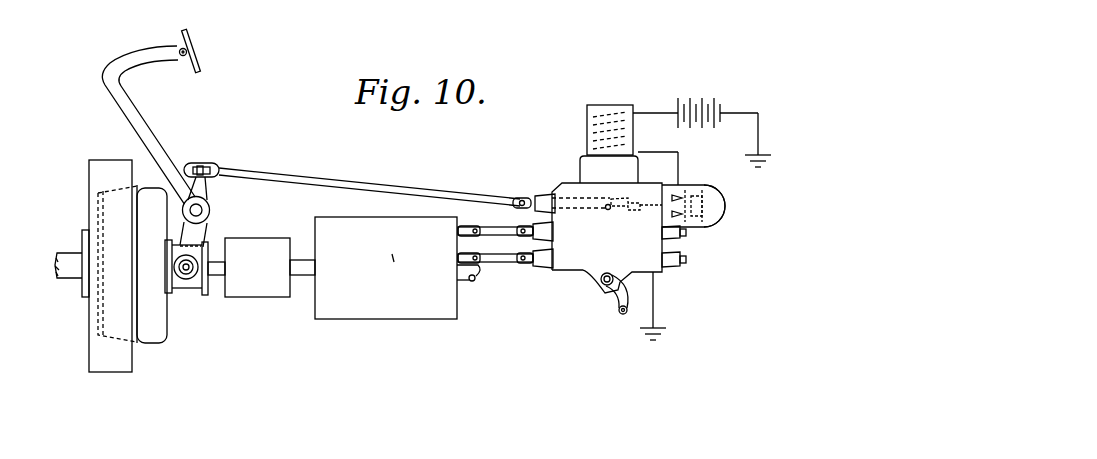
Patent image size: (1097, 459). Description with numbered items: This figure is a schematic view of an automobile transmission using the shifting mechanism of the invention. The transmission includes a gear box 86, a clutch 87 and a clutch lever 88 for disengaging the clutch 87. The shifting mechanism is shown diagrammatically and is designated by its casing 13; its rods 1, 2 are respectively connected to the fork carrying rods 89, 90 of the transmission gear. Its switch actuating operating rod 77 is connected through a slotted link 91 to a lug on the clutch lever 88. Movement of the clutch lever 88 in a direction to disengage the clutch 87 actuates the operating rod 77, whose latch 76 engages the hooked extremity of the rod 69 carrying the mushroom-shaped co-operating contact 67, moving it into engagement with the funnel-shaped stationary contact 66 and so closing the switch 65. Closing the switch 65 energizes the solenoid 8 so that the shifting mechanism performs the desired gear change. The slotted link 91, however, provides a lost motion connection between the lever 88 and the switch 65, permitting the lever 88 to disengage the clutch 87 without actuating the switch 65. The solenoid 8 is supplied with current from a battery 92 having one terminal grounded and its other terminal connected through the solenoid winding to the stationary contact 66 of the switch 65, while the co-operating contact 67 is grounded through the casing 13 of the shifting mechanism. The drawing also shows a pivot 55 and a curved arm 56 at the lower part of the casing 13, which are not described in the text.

The clutch lever 88 is at (148, 143).
The slotted link 91 is at (219, 166).
The clutch 87 is at (133, 343).
The gear box 86 is at (332, 268).
The fork carrying rod 90 is at (468, 212).
The fork carrying rod 89 is at (476, 261).
The rod 2 is at (527, 224).
The rod 1 is at (531, 263).
The operating rod 77 is at (534, 196).
The casing 13 is at (584, 270).
The latch 76 is at (623, 212).
The rod 69 is at (652, 212).
The lever pivot 55 is at (615, 262).
The curved lever arm 56 is at (617, 302).
The stationary contact 66 is at (667, 185).
The co-operating contact 67 is at (693, 195).
The switch 65 is at (724, 215).
The solenoid 8 is at (590, 131).
The battery 92 is at (699, 126).